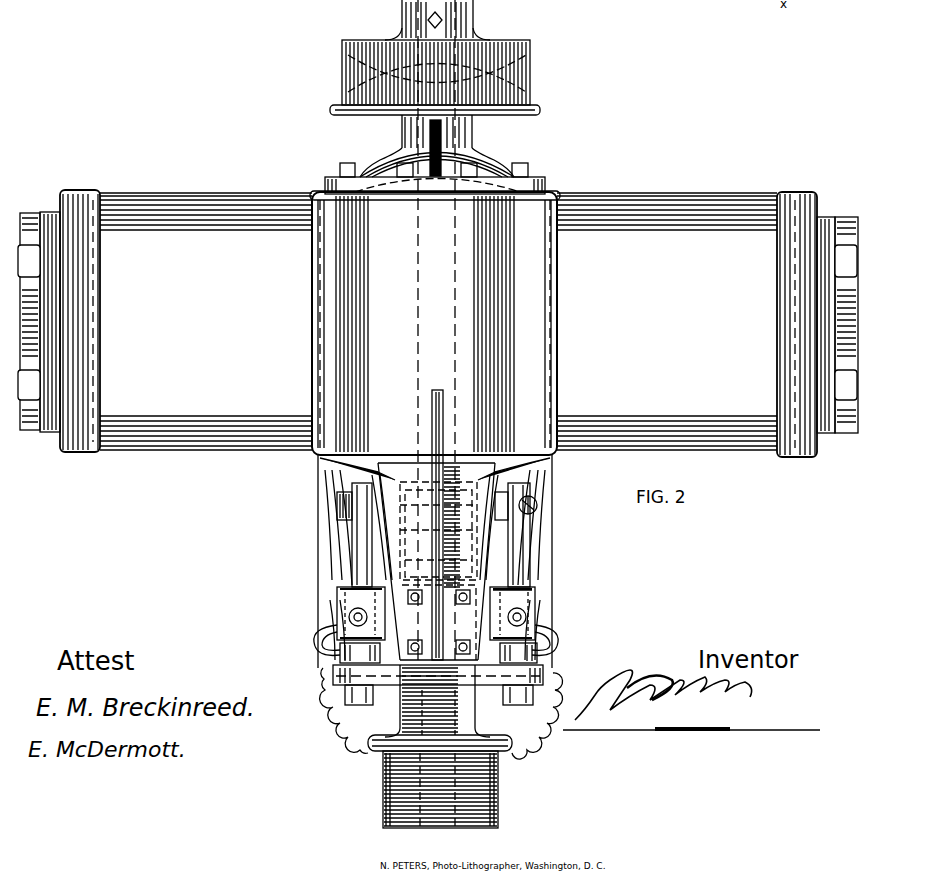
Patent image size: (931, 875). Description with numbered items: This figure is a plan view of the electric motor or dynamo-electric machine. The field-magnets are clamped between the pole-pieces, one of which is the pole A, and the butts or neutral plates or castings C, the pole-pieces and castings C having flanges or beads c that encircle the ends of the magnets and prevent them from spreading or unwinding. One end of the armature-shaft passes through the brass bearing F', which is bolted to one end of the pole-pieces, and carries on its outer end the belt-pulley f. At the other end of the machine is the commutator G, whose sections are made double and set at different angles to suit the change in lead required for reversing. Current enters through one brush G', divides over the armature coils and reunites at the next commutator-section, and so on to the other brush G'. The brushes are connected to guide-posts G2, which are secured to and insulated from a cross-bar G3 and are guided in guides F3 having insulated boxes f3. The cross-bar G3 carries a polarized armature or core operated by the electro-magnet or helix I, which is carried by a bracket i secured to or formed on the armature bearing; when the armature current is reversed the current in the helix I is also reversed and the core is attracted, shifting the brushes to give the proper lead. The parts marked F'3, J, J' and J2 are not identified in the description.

The pole of the field-magnets A is at (434, 330).
The butts or neutral plates or castings C is at (438, 323).
The flanges or beads c is at (782, 275).
The belt-pulley f is at (435, 57).
The brass bearing F' is at (435, 157).
The guides F3 is at (337, 603).
The bearing block F'3 is at (540, 613).
The insulated boxes f3 is at (535, 590).
The commutator G is at (425, 535).
The brush G' is at (551, 498).
The guide-posts G2 is at (438, 555).
The cross-bar G3 is at (400, 683).
The link loop J is at (335, 644).
The link loop J' is at (537, 644).
The support frame J2 is at (449, 561).
The electro-magnet or helix I is at (441, 748).
The bracket i is at (437, 701).